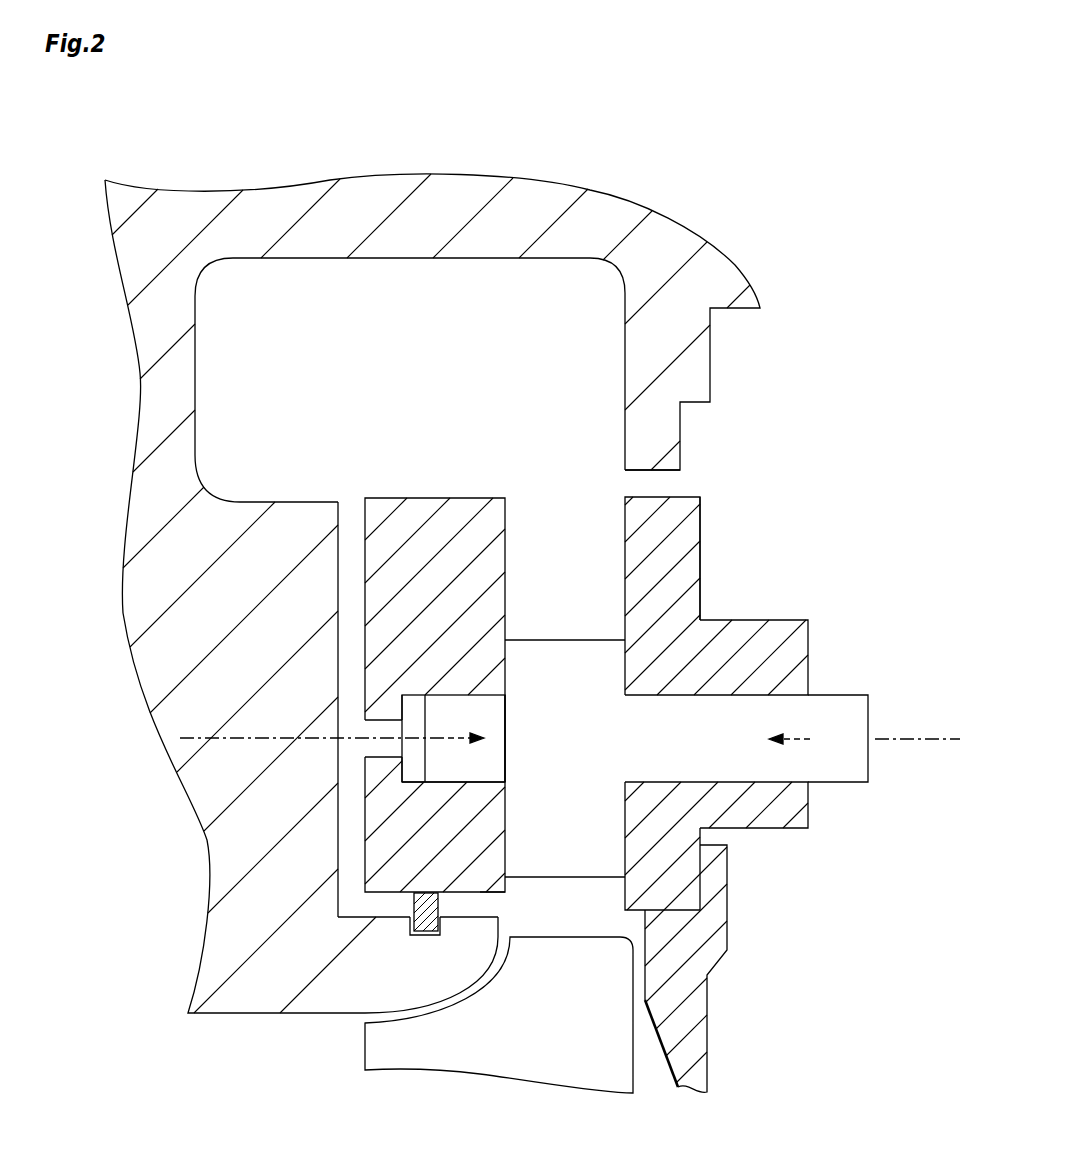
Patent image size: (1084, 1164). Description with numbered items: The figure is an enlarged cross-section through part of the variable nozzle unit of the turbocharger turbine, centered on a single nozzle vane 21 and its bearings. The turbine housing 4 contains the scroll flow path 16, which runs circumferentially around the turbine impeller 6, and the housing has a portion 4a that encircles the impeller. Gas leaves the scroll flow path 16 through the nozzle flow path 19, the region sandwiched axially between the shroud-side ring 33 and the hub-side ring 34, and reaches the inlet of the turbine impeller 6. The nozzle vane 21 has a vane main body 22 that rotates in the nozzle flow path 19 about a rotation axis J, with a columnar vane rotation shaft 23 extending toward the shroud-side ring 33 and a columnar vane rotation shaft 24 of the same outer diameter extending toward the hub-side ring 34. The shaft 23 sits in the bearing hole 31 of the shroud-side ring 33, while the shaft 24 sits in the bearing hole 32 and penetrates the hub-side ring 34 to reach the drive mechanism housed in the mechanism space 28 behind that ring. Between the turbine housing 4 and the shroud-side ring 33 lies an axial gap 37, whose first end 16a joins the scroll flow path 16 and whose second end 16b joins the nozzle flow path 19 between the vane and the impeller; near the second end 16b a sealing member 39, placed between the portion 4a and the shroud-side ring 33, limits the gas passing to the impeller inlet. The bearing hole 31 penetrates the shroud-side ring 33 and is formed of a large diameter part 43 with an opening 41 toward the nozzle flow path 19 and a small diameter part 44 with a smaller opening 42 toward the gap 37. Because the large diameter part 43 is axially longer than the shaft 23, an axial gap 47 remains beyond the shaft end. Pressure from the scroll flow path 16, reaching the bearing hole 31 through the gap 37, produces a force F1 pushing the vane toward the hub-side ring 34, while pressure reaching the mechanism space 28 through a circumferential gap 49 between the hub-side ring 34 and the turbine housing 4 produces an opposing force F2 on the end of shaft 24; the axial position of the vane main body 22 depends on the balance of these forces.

The turbine housing 4 is at (230, 594).
The portion of the turbine housing 4a is at (457, 970).
The turbine impeller 6 is at (607, 988).
The scroll flow path 16 is at (372, 366).
The first end 16a is at (350, 497).
The second end 16b is at (498, 905).
The nozzle flow path 19 is at (544, 576).
The nozzle vane 21 is at (567, 880).
The vane main body 22 is at (538, 860).
The vane rotation shaft 23 is at (368, 875).
The vane rotation shaft 24 is at (727, 762).
The mechanism space 28 is at (787, 511).
The bearing hole 31 is at (90, 660).
The bearing hole 32 is at (729, 695).
The shroud-side ring 33 is at (437, 527).
The hub-side ring 34 is at (643, 527).
The gap 37 is at (350, 583).
The sealing member 39 is at (413, 900).
The opening 41 is at (506, 713).
The opening 42 is at (363, 743).
The large diameter part 43 is at (448, 697).
The small diameter part 44 is at (400, 725).
The gap 47 is at (405, 764).
The gap 49 is at (660, 485).
The force F1 is at (458, 745).
The force F2 is at (797, 740).
The rotation axis J is at (930, 738).